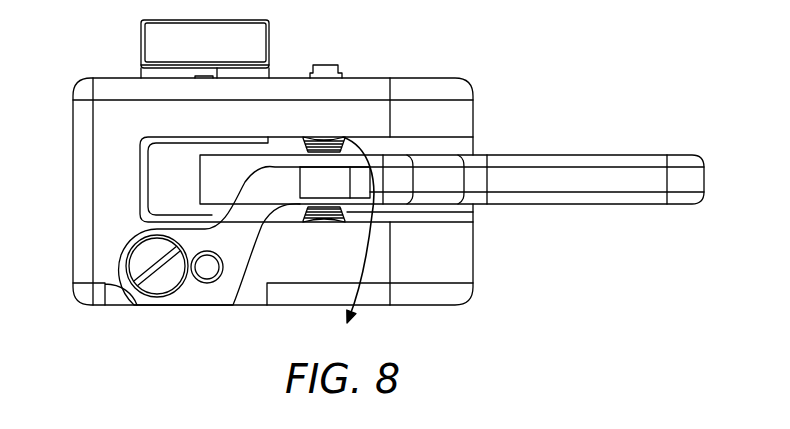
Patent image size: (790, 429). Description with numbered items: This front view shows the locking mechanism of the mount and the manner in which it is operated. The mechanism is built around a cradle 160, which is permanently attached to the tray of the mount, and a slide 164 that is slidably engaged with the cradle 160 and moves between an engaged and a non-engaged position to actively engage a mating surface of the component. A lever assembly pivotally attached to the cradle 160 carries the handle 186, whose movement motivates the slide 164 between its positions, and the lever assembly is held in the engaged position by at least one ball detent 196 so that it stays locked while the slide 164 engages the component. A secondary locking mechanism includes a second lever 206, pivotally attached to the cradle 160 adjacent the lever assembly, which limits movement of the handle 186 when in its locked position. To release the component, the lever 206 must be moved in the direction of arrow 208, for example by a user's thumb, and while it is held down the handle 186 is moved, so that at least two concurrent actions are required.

The cradle 160 is at (453, 88).
The slide 164 is at (163, 38).
The handle 186 is at (593, 155).
The ball detent 196 is at (302, 210).
The lever 206 is at (252, 198).
The arrow 208 is at (367, 256).